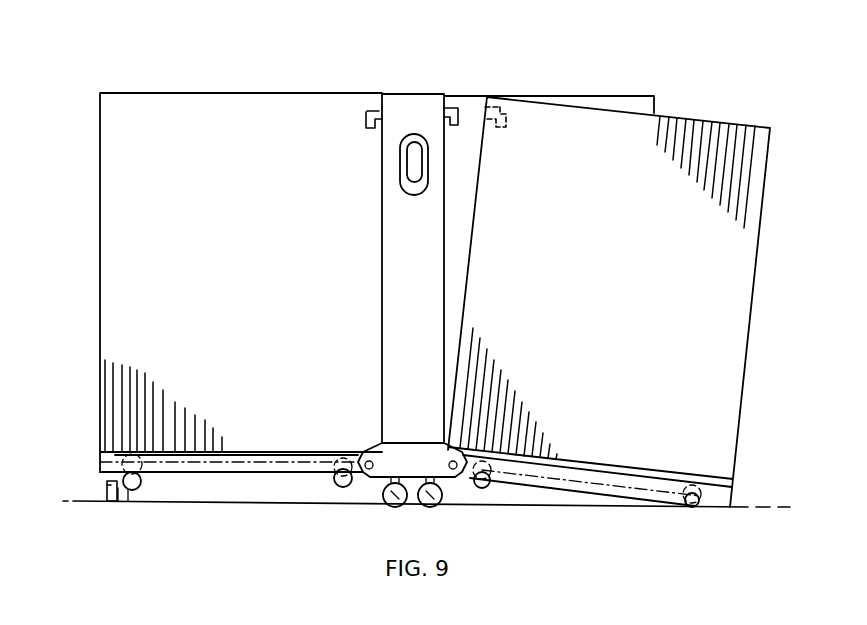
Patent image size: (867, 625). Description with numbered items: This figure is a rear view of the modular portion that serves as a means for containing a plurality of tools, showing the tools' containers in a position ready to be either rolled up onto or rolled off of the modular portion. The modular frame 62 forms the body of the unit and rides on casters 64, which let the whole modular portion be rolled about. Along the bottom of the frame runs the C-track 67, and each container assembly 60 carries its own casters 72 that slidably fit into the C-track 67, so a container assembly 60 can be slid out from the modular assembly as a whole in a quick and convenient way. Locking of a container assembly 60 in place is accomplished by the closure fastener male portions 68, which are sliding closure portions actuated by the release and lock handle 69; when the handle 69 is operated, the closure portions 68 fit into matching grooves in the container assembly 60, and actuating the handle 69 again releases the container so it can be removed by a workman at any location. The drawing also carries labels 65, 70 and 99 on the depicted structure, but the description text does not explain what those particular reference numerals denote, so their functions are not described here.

The container assembly 60 is at (341, 60).
The modular frame 62 is at (400, 220).
The casters 64 is at (107, 488).
The wheel 65 is at (136, 486).
The C-track 67 is at (270, 462).
The closure fastener male portions 68 is at (365, 117).
The release and lock handle 69 is at (410, 160).
The bracket 70 is at (506, 122).
The casters 72 is at (125, 463).
The panel surface 99 is at (263, 307).